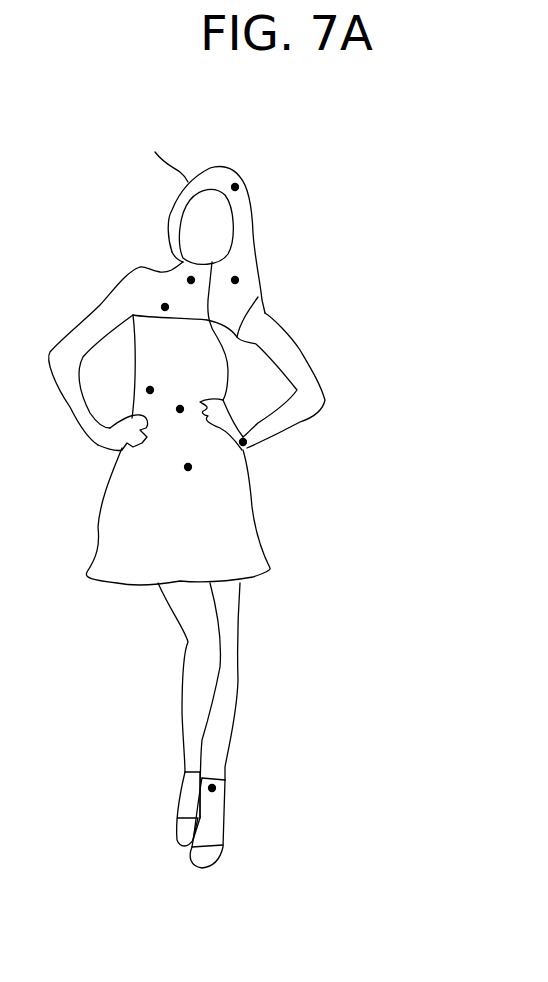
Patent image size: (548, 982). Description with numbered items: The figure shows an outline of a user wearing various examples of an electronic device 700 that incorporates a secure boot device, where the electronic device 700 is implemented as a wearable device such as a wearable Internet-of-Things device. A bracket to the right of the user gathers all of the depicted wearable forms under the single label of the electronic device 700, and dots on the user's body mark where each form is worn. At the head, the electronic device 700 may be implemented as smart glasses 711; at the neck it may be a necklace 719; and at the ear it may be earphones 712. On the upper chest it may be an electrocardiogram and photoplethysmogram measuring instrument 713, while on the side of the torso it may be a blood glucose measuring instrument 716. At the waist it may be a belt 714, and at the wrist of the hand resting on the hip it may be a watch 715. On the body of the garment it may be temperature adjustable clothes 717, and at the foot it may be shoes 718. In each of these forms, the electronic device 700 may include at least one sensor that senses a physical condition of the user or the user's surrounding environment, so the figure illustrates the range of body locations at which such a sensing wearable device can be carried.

The electronic device 700 is at (397, 800).
The smart glasses 711 is at (342, 183).
The necklace 719 is at (342, 240).
The earphones 712 is at (342, 275).
The electrocardiogram (ECG) and photoplethysmogram (PPG) measuring instrument 713 is at (342, 317).
The blood glucose measuring instrument 716 is at (343, 378).
The belt 714 is at (343, 413).
The watch 715 is at (343, 443).
The temperature adjustable clothes 717 is at (343, 475).
The shoes 718 is at (342, 790).